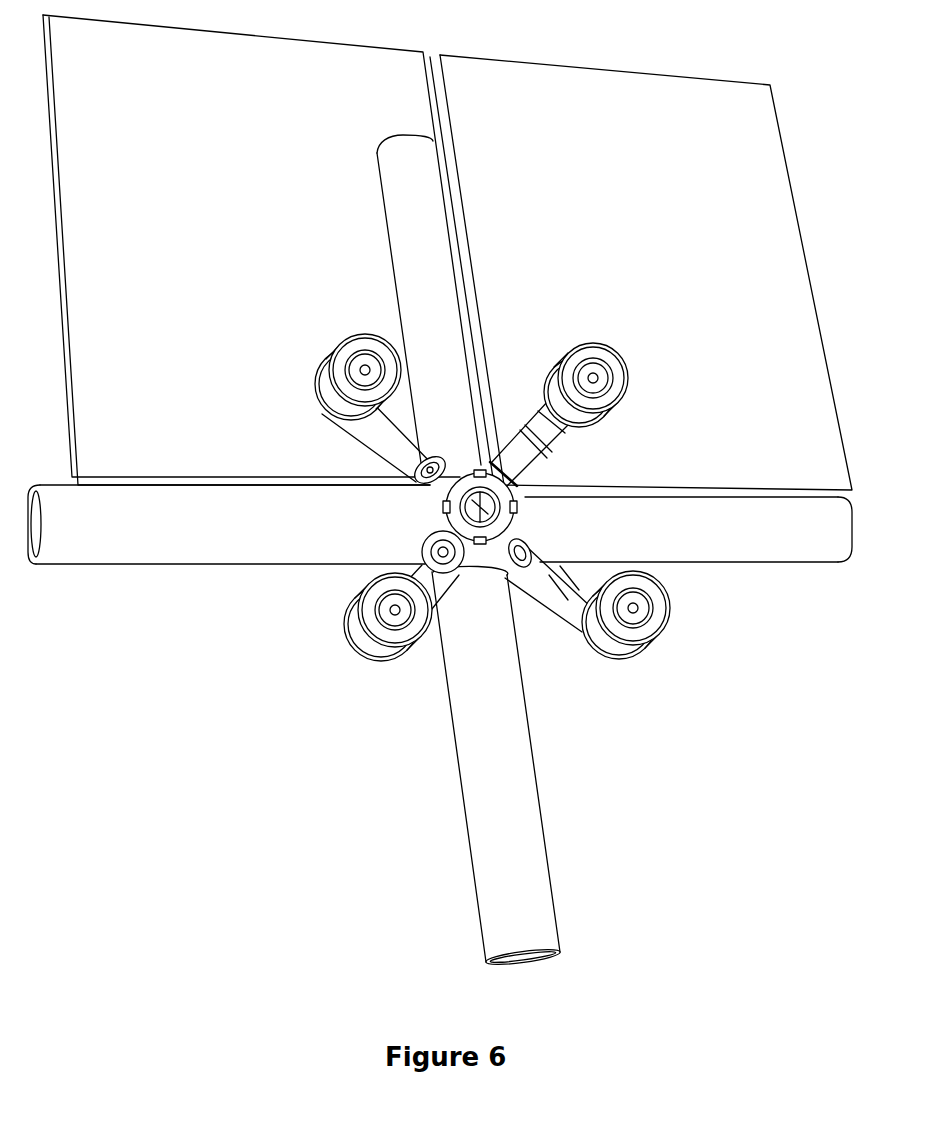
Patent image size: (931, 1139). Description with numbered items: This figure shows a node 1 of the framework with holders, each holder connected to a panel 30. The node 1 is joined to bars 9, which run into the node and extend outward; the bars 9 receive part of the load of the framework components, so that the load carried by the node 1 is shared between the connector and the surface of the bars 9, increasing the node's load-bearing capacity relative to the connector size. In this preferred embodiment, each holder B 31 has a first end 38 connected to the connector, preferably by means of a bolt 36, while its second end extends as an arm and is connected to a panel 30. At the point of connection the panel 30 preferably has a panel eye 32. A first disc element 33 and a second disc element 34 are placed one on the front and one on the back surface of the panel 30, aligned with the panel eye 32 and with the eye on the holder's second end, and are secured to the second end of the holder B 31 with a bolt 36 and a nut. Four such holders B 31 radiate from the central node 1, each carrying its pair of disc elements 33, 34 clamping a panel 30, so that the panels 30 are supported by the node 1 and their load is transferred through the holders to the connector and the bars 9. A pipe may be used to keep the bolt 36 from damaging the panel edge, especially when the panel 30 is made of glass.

The node 1 is at (294, 706).
The bar 9 is at (130, 564).
The panel 30 is at (376, 46).
The holder B 31 is at (356, 453).
The panel eye 32 is at (545, 372).
The first disc element 33 is at (314, 381).
The second disc element 34 is at (378, 336).
The bolt 36 is at (363, 368).
The first end 38 is at (436, 460).